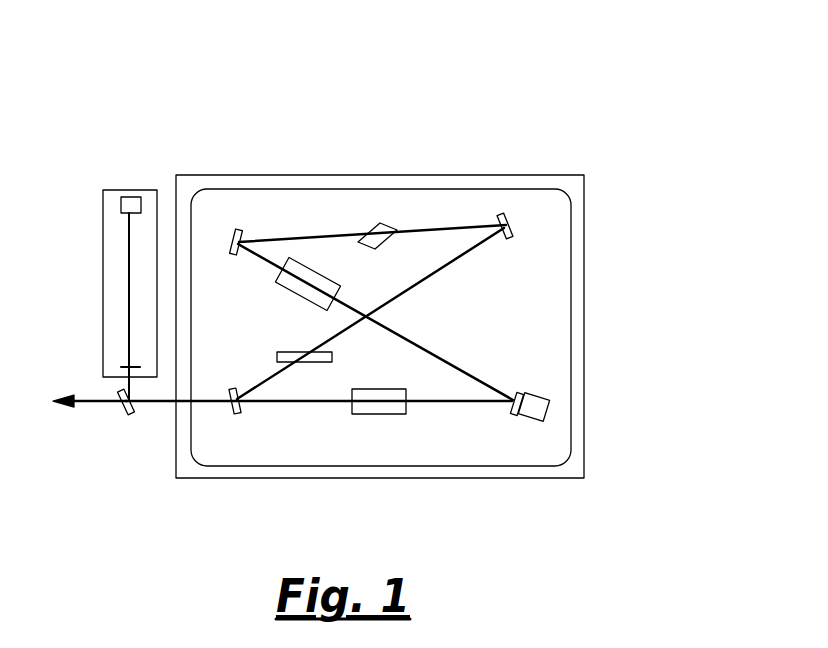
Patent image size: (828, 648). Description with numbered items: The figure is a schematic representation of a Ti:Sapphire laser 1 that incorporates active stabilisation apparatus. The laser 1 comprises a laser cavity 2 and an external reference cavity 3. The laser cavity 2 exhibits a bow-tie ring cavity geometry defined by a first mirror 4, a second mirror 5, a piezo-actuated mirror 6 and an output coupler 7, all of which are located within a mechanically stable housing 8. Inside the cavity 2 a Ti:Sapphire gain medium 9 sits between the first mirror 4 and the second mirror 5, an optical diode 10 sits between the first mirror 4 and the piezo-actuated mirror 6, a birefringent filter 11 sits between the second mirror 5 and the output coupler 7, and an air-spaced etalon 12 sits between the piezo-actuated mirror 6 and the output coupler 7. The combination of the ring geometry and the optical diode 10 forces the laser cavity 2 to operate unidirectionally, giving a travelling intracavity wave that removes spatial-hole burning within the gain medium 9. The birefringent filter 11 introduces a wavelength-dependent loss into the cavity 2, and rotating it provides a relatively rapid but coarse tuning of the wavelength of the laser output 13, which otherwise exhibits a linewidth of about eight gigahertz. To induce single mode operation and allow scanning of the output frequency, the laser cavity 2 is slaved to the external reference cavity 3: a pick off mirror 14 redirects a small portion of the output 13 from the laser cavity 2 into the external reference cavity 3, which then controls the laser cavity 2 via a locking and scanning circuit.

The Ti:Sapphire laser 1 is at (594, 86).
The laser cavity 2 is at (509, 312).
The external reference cavity 3 is at (112, 261).
The first mirror 4 is at (235, 243).
The second mirror 5 is at (509, 230).
The piezo-actuated mirror 6 is at (538, 398).
The output coupler 7 is at (233, 413).
The mechanically stable housing 8 is at (535, 467).
The Ti:Sapphire gain medium 9 is at (373, 232).
The optical diode 10 is at (310, 294).
The birefringent filter 11 is at (317, 362).
The air-spaced etalon 12 is at (377, 414).
The laser output 13 is at (78, 405).
The pick off mirror 14 is at (123, 413).